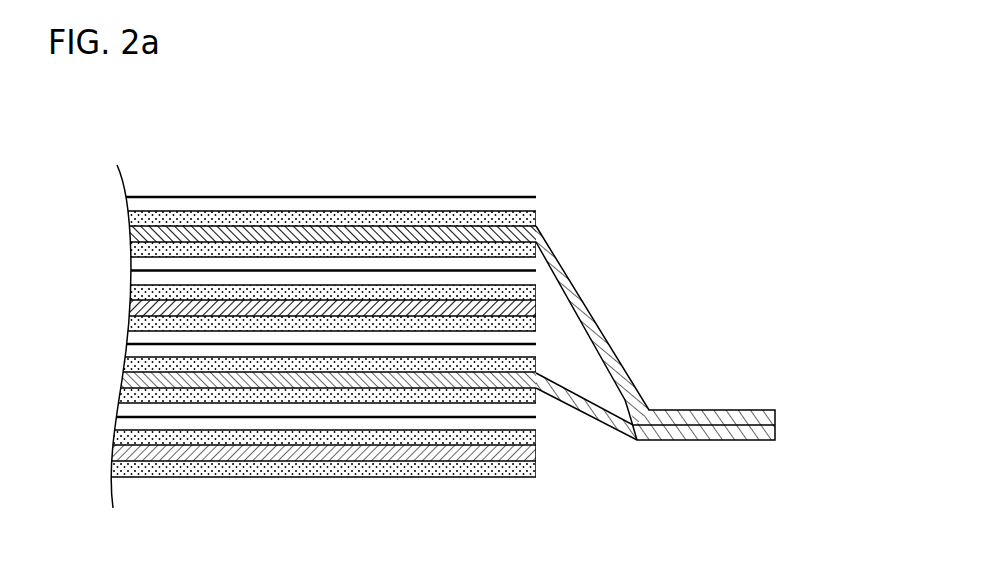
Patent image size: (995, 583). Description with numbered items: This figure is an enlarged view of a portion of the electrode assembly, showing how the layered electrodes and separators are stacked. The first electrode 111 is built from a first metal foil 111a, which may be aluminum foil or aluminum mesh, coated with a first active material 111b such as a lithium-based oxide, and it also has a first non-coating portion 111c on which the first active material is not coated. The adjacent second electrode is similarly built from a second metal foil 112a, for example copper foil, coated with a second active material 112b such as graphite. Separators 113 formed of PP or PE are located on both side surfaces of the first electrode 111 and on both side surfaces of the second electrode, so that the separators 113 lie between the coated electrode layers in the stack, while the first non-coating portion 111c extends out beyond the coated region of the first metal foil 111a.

The first electrode 111 is at (621, 298).
The first metal foil 111a is at (182, 228).
The first active material 111b is at (257, 148).
The first non-coating portion 111c is at (635, 381).
The second metal foil 112a is at (505, 297).
The second active material 112b is at (445, 152).
The separators 113 is at (356, 198).